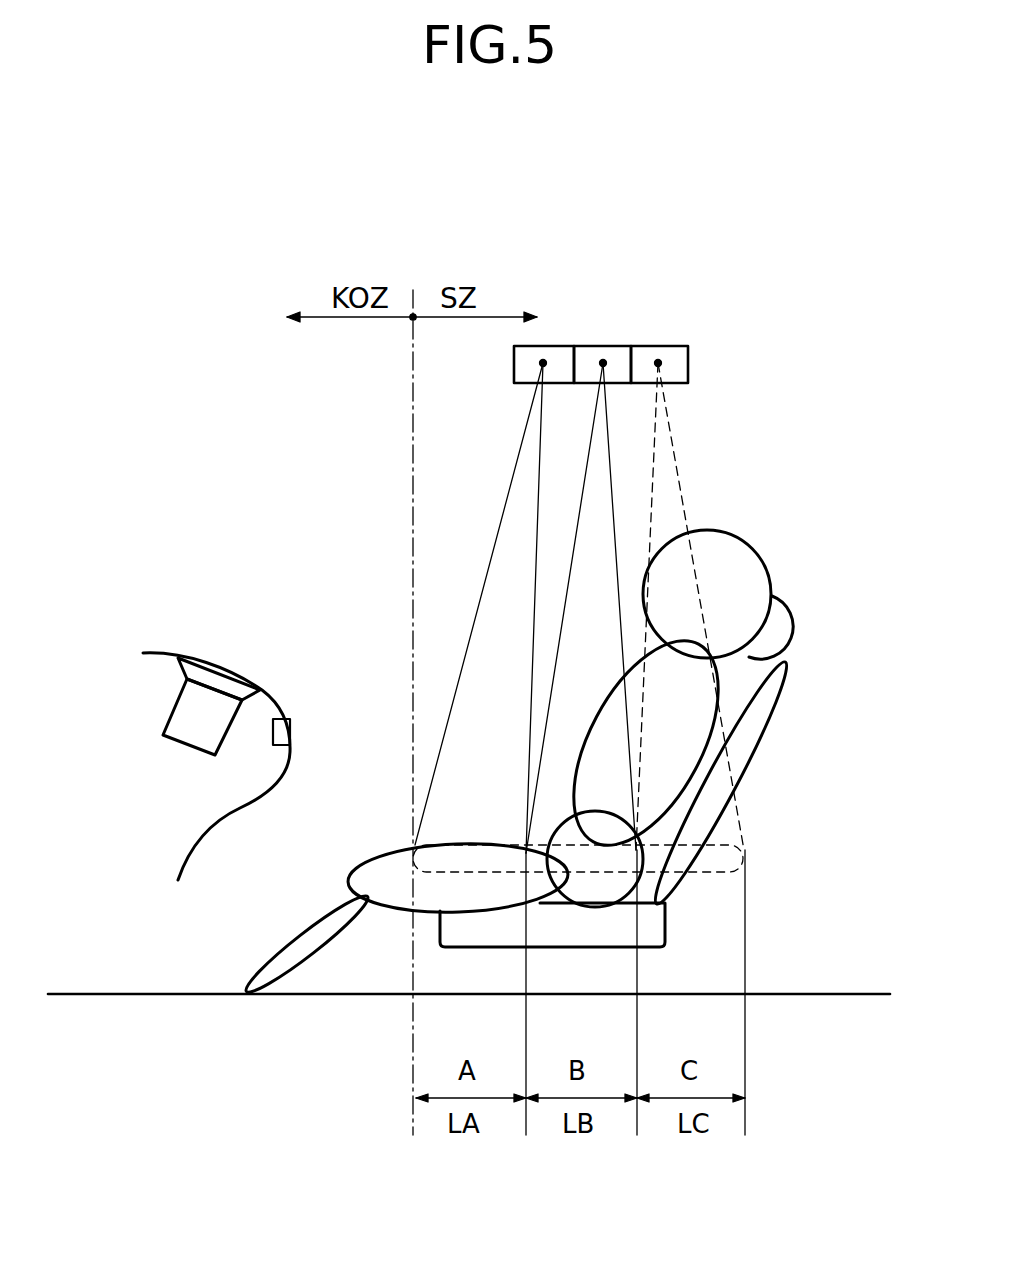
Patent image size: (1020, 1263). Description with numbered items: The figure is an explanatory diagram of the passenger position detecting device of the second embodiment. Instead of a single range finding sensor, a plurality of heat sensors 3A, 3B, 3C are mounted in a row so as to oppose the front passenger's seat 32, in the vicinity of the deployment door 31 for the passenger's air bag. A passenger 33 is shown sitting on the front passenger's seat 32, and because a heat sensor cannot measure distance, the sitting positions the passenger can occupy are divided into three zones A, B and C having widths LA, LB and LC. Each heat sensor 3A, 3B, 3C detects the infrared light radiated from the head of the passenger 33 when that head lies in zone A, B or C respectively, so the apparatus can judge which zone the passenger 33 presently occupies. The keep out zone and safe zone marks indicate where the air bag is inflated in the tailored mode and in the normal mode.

The heat sensor 3A is at (549, 346).
The heat sensor 3B is at (610, 346).
The heat sensor 3C is at (672, 346).
The deployment door 31 is at (208, 673).
The front passenger's seat 32 is at (772, 713).
The passenger 33 is at (763, 555).